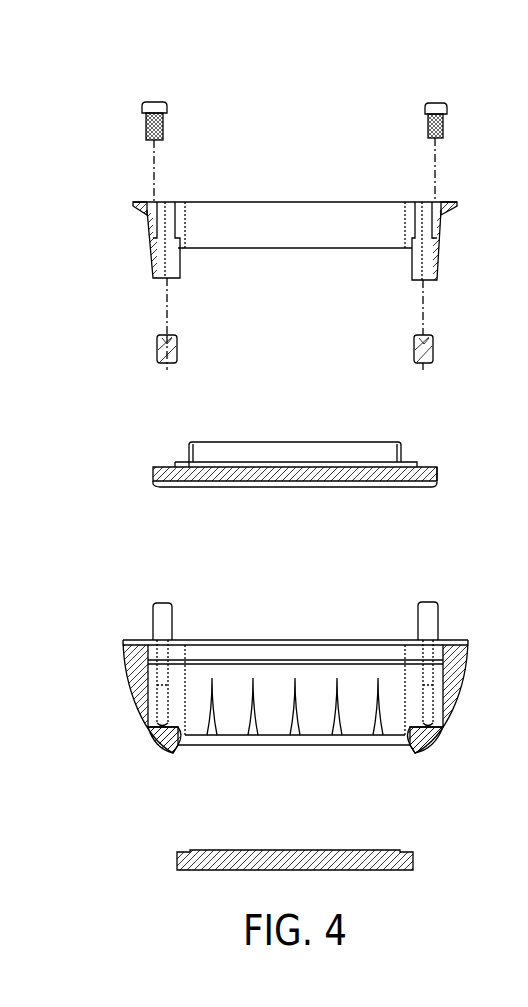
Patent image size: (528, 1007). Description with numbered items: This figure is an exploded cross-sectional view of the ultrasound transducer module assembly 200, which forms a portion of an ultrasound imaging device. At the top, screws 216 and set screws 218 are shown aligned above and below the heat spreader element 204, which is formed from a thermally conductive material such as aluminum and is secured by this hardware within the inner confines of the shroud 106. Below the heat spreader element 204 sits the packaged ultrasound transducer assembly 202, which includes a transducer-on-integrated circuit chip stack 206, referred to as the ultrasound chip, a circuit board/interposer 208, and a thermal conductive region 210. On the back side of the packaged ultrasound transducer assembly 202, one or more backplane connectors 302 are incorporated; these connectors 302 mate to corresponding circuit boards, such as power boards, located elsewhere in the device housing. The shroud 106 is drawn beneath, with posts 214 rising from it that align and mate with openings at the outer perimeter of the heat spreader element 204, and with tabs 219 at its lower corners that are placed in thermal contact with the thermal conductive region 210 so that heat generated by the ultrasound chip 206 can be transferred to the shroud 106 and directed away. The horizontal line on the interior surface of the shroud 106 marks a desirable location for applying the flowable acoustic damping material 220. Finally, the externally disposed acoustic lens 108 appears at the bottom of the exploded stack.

The ultrasound transducer module assembly 200 is at (108, 117).
The packaged ultrasound transducer assembly 202 is at (108, 447).
The screws 216 is at (447, 108).
The heat spreader element 204 is at (460, 205).
The set screws 218 is at (432, 350).
The backplane connectors 302 is at (380, 450).
The circuit board/interposer 208 is at (437, 468).
The transducer-on-integrated circuit chip stack 206 is at (382, 488).
The thermal conductive region 210 is at (427, 484).
The shroud 106 is at (133, 675).
The tabs 219 is at (175, 730).
The flowable acoustic damping material 220 is at (328, 667).
The posts 214 is at (428, 628).
The acoustic lens 108 is at (188, 858).